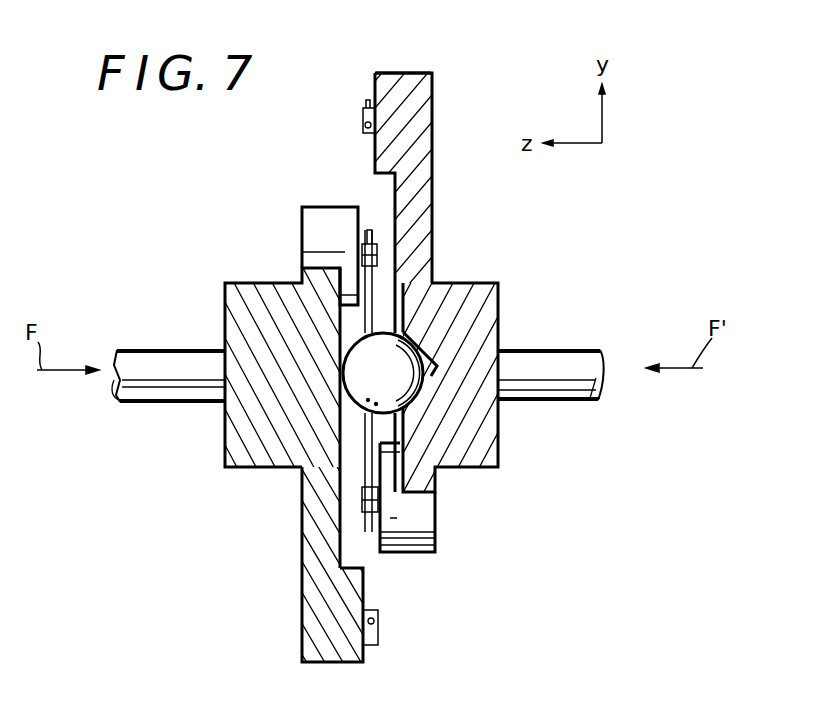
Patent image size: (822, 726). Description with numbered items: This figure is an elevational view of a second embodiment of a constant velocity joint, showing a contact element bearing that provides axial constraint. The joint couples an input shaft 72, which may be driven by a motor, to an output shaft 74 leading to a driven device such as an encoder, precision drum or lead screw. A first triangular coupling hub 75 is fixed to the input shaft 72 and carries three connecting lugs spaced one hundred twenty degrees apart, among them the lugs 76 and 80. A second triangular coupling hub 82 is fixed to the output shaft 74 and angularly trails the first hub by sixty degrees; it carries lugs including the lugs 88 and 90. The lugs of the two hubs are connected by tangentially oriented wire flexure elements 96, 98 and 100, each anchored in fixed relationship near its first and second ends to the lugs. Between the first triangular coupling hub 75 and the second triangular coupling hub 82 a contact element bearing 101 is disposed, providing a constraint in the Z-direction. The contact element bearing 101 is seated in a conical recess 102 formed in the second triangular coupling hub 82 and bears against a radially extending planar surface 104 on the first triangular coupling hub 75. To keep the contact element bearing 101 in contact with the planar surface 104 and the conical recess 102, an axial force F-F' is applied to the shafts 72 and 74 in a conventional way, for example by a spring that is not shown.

The input shaft 72 is at (142, 350).
The output shaft 74 is at (572, 350).
The first triangular coupling hub 75 is at (302, 520).
The connecting lug 76 is at (312, 624).
The connecting lug 80 is at (308, 238).
The second triangular coupling hub 82 is at (434, 167).
The lug 88 is at (412, 73).
The lug 90 is at (437, 516).
The wire flexure element 96 is at (378, 636).
The wire flexure element 98 is at (365, 126).
The wire flexure element 100 is at (376, 280).
The contact element bearing 101 is at (383, 372).
The conical recess 102 is at (437, 386).
The radially extending planar surface 104 is at (347, 537).